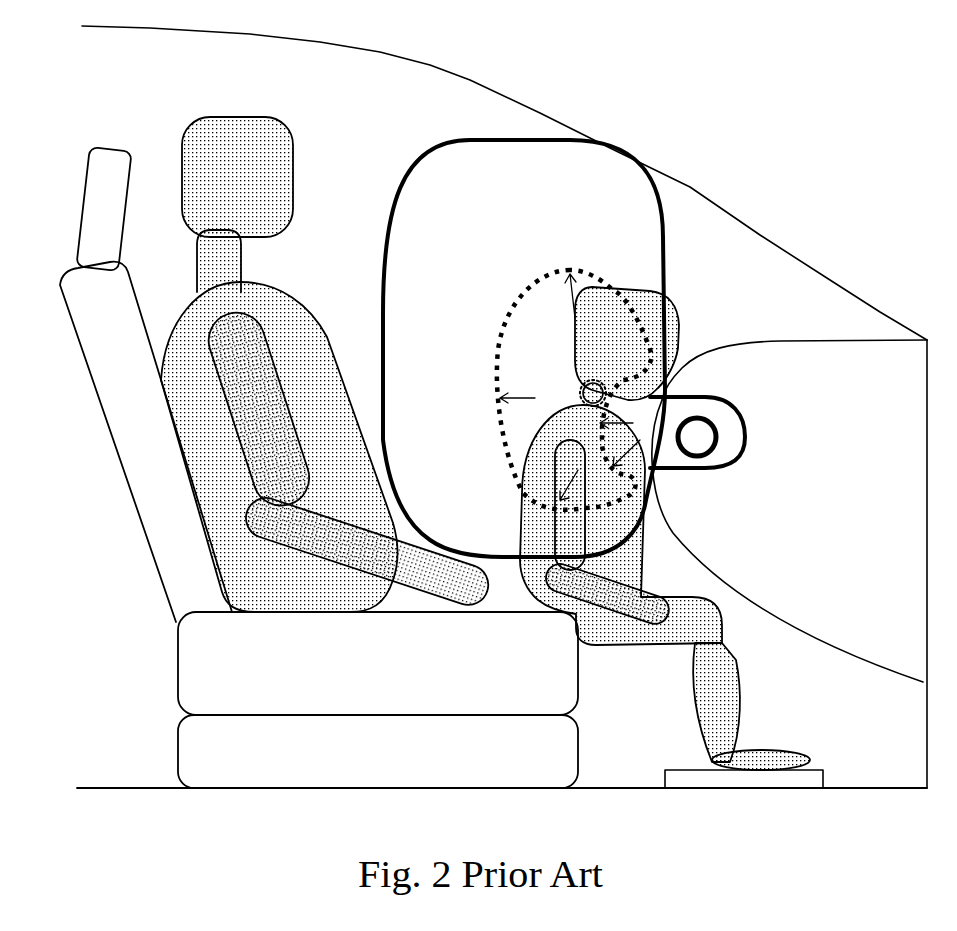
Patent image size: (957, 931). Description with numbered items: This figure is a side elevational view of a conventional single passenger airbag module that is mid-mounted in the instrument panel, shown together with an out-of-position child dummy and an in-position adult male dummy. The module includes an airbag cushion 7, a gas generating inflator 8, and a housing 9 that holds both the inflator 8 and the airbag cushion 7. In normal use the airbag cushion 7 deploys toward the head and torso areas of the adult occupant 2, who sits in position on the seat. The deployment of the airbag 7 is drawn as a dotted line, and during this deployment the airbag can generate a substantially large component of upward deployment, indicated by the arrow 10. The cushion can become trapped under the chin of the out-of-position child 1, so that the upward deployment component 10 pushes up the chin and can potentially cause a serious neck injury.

The out-of-position child 1 is at (680, 332).
The adult occupant 2 is at (266, 131).
The airbag cushion 7 is at (580, 144).
The gas generating inflator 8 is at (718, 440).
The housing 9 is at (673, 473).
The component of upward deployment 10 is at (572, 303).